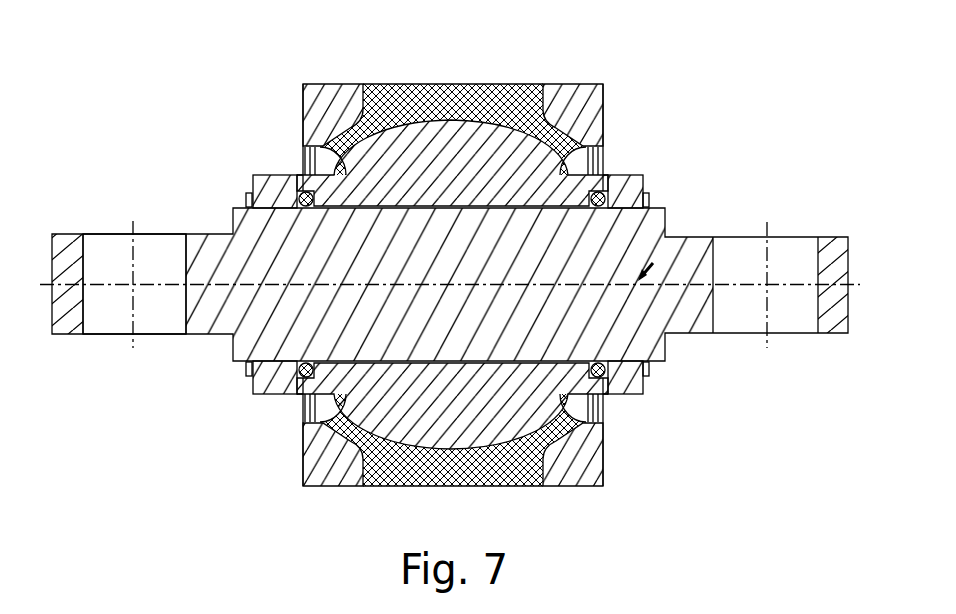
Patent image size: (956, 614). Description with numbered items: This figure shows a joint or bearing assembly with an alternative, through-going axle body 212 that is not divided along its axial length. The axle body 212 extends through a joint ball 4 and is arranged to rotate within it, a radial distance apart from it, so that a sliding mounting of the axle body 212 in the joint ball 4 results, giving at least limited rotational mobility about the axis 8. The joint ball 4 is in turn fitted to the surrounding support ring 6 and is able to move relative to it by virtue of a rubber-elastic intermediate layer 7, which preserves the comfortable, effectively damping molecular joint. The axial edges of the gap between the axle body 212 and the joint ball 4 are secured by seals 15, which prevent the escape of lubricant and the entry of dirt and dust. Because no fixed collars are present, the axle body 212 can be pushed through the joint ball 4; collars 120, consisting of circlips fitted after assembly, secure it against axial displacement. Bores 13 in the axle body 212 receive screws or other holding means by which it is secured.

The joint ball 4 is at (503, 167).
The support ring 6 is at (588, 466).
The rubber-elastic intermediate layer 7 is at (478, 84).
The axis 8 is at (95, 280).
The bores 13 is at (132, 323).
The seals 15 is at (614, 366).
The collars 120 is at (247, 196).
The axle body 212 is at (680, 238).